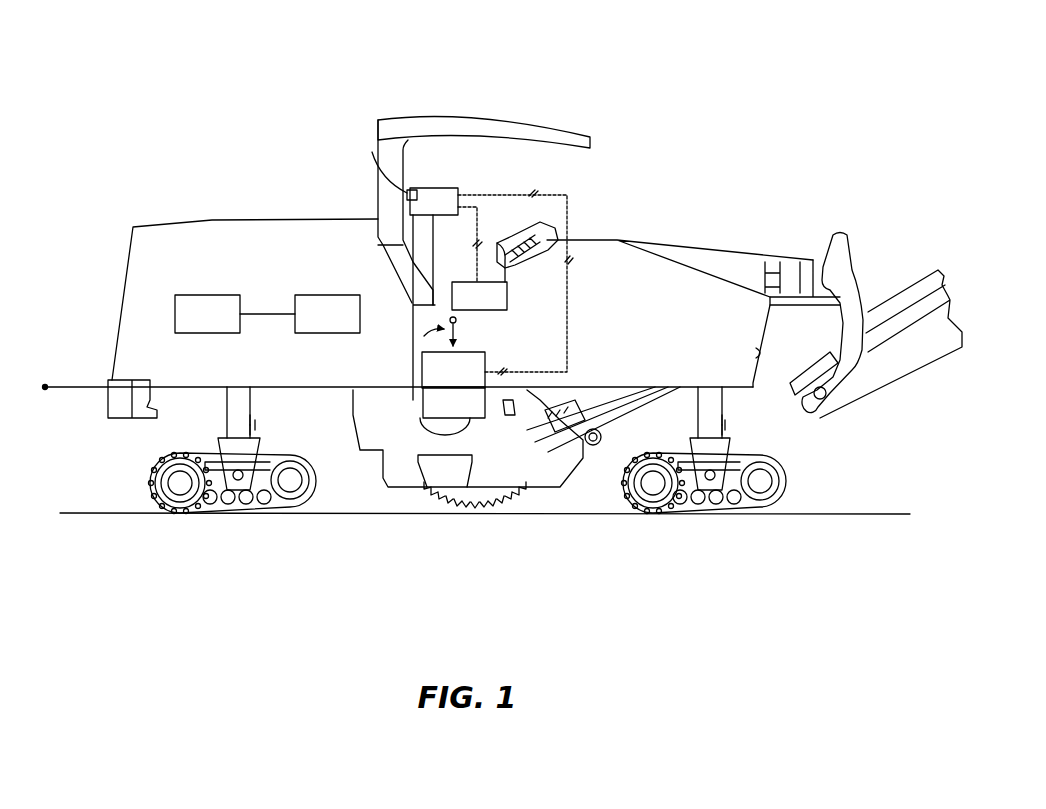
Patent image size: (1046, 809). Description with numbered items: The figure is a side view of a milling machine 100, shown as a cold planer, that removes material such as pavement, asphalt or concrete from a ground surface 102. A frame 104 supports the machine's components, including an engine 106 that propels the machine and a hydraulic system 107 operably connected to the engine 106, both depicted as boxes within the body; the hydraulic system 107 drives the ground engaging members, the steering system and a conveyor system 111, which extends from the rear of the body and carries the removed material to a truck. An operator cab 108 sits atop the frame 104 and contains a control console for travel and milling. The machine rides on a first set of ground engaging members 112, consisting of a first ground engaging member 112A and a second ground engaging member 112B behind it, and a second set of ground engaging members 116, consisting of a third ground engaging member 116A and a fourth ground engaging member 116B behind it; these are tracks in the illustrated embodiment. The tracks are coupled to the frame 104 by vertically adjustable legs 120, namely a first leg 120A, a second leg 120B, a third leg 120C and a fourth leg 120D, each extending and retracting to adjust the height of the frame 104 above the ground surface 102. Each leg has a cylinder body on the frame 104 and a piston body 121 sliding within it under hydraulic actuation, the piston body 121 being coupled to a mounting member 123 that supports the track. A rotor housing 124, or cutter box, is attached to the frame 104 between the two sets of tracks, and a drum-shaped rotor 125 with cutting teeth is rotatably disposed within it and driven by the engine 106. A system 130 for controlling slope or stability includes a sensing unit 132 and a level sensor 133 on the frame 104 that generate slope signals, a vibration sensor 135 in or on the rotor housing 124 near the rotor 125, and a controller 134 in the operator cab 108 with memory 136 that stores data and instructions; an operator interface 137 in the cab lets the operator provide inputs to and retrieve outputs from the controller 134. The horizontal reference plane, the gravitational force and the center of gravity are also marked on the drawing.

The milling machine 100 is at (843, 140).
The ground surface 102 is at (897, 514).
The frame 104 is at (620, 240).
The engine 106 is at (235, 314).
The hydraulic system 107 is at (327, 314).
The operator cab 108 is at (455, 118).
The conveyor system 111 is at (923, 367).
The first set of ground engaging members 112 is at (675, 523).
The first ground engaging member 112A is at (782, 478).
The second ground engaging member 112B is at (787, 477).
The second set of ground engaging members 116 is at (223, 533).
The third ground engaging member 116A is at (312, 480).
The fourth ground engaging member 116B is at (315, 477).
The vertically adjustable legs 120 is at (212, 420).
The first leg 120A is at (733, 428).
The second leg 120B is at (730, 425).
The third leg 120C is at (255, 420).
The fourth leg 120D is at (255, 420).
The piston body 121 is at (227, 398).
The mounting member 123 is at (262, 443).
The rotor housing 124 is at (582, 466).
The rotor 125 is at (485, 508).
The system 130 is at (482, 178).
The sensing unit 132 is at (479, 296).
The level sensor 133 is at (450, 350).
The controller 134 is at (432, 201).
The vibration sensor 135 is at (454, 402).
The memory 136 is at (371, 165).
The operator interface 137 is at (547, 223).